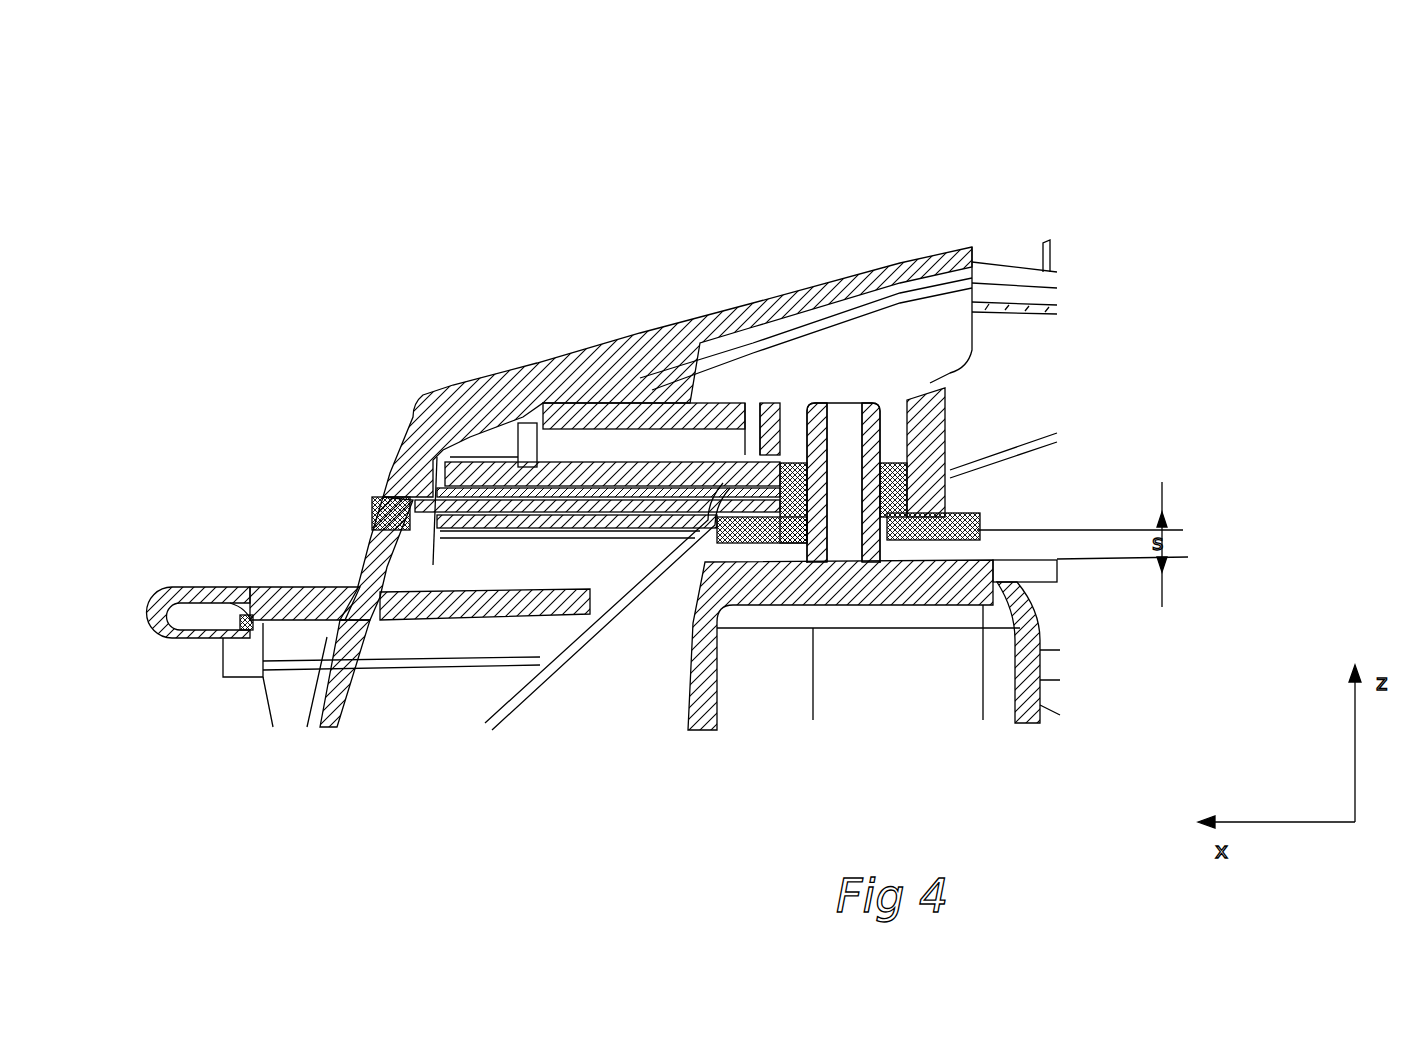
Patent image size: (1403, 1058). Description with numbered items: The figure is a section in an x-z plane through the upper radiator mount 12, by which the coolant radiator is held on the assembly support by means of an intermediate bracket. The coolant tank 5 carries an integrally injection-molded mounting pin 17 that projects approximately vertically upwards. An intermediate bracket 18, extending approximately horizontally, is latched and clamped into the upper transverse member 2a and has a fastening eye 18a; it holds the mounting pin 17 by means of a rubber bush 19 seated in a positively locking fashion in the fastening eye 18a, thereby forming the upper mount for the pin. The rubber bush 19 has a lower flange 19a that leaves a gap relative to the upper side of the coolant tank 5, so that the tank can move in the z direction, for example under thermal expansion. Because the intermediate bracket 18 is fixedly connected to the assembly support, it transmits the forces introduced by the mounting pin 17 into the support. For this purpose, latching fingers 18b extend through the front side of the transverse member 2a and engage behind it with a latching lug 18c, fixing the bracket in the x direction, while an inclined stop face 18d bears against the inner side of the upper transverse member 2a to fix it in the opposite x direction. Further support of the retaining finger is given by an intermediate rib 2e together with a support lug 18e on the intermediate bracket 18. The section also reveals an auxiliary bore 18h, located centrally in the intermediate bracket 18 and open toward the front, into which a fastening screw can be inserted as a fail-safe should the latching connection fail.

The upper transverse member 2a is at (550, 338).
The intermediate rib 2e is at (550, 525).
The coolant tank 5 is at (682, 673).
The upper radiator mount 12 is at (1118, 262).
The mounting pin 17 is at (843, 447).
The intermediate bracket 18 is at (700, 393).
The fastening eye 18a is at (950, 403).
The latching fingers 18b is at (445, 448).
The latching lug 18c is at (371, 516).
The inclined stop face 18d is at (527, 423).
The support lug 18e is at (747, 403).
The auxiliary bore 18h is at (653, 433).
The rubber bush 19 is at (950, 435).
The lower flange 19a is at (970, 512).